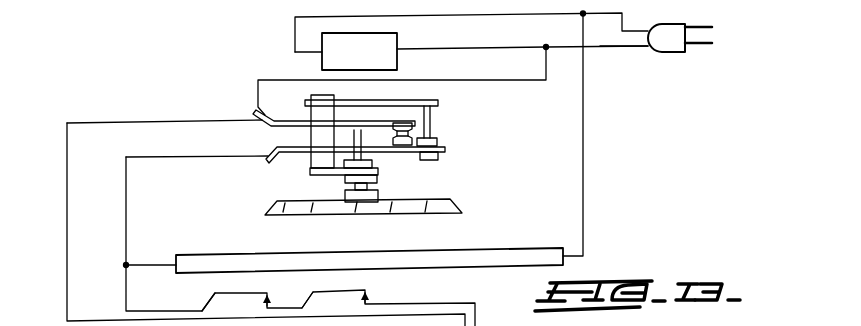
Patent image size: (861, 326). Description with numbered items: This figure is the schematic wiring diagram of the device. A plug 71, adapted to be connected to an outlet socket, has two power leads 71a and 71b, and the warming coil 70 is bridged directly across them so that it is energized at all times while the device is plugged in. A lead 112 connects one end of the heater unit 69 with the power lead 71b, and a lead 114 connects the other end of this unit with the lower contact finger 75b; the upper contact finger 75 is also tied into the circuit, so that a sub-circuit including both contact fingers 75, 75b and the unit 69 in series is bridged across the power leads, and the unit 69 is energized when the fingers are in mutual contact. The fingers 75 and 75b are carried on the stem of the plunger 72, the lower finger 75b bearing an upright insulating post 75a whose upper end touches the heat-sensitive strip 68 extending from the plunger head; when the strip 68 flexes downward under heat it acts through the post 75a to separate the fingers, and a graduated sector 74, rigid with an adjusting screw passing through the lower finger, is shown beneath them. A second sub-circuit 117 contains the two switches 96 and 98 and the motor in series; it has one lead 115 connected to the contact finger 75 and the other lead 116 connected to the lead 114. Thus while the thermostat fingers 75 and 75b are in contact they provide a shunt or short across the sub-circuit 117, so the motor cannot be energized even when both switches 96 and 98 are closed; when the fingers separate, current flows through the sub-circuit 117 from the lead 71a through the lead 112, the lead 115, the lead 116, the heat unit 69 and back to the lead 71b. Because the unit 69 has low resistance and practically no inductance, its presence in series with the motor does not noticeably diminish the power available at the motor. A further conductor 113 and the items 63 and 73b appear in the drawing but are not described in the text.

The power supply line 63 is at (471, 26).
The heat-sensitive strip 68 is at (438, 101).
The heater unit 69 is at (465, 252).
The warming coil 70 is at (397, 58).
The plug 71 is at (672, 28).
The power lead 71a is at (625, 48).
The power lead 71b is at (470, 16).
The plunger 72 is at (334, 97).
The lower contact arm 73b is at (313, 158).
The graduated sector 74 is at (368, 214).
The contact finger 75 is at (293, 121).
The upright post 75a is at (433, 125).
The contact finger 75b is at (390, 155).
The switch 96 is at (207, 292).
The switch 98 is at (310, 292).
The lead 112 is at (287, 81).
The wire 113 is at (584, 142).
The lead 114 is at (128, 217).
The lead 115 is at (66, 225).
The lead 116 is at (126, 288).
The second sub-circuit 117 is at (137, 297).